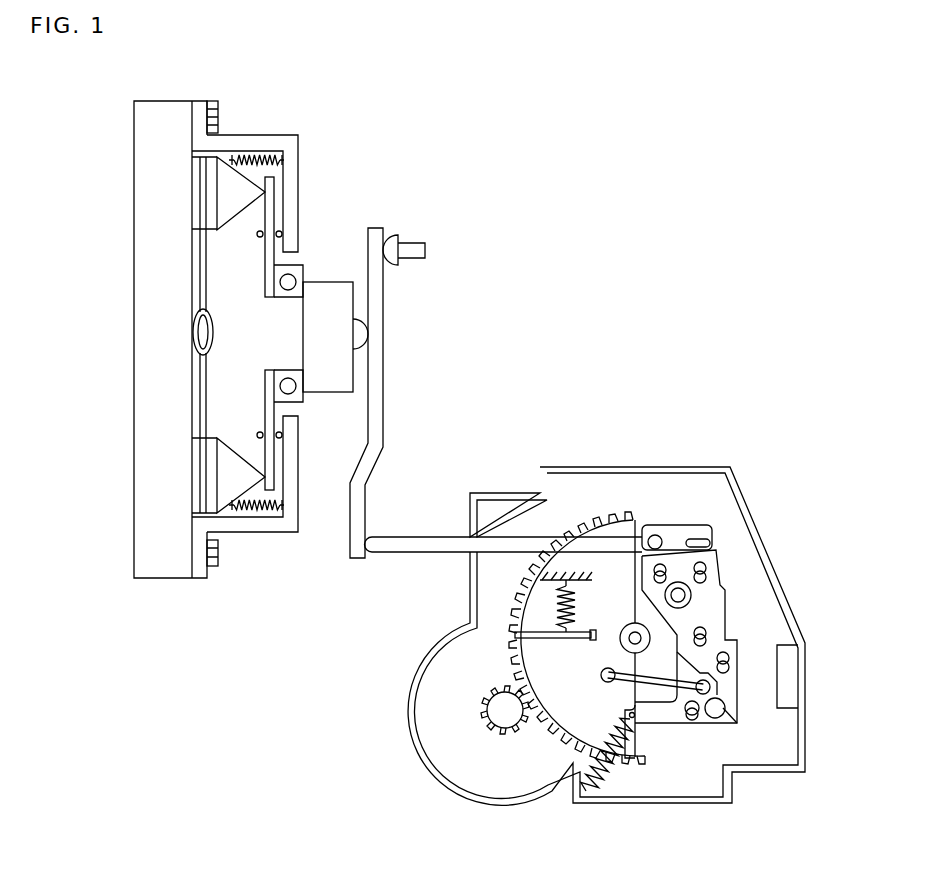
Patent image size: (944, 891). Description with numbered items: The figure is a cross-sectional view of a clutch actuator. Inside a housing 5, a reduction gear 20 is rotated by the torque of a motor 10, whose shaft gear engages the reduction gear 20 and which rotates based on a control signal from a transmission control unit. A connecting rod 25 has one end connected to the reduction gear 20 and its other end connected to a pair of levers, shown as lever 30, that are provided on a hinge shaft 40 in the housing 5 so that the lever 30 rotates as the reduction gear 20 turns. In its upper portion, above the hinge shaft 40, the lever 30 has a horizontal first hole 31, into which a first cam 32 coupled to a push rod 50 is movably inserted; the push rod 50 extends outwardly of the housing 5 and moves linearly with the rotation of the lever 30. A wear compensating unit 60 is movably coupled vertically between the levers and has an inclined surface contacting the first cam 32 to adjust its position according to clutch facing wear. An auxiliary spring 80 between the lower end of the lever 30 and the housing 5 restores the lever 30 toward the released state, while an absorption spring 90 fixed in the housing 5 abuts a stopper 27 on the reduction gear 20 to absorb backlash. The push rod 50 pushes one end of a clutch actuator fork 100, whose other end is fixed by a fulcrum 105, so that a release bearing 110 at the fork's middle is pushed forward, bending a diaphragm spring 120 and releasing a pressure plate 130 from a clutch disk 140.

The housing 5 is at (753, 520).
The motor 10 is at (452, 702).
The reduction gear 20 is at (555, 693).
The connecting rod 25 is at (658, 678).
The stopper 27 is at (595, 633).
The lever 30 is at (717, 540).
The first hole 31 is at (697, 540).
The first cam 32 is at (655, 537).
The hinge shaft 40 is at (678, 595).
The push rod 50 is at (500, 543).
The wear compensating unit 60 is at (725, 617).
The auxiliary spring 80 is at (613, 773).
The absorption spring 90 is at (520, 607).
The clutch actuator fork 100 is at (377, 370).
The fulcrum 105 is at (413, 252).
The release bearing 110 is at (335, 302).
The diaphragm spring 120 is at (270, 188).
The pressure plate 130 is at (238, 183).
The clutch disk 140 is at (197, 195).